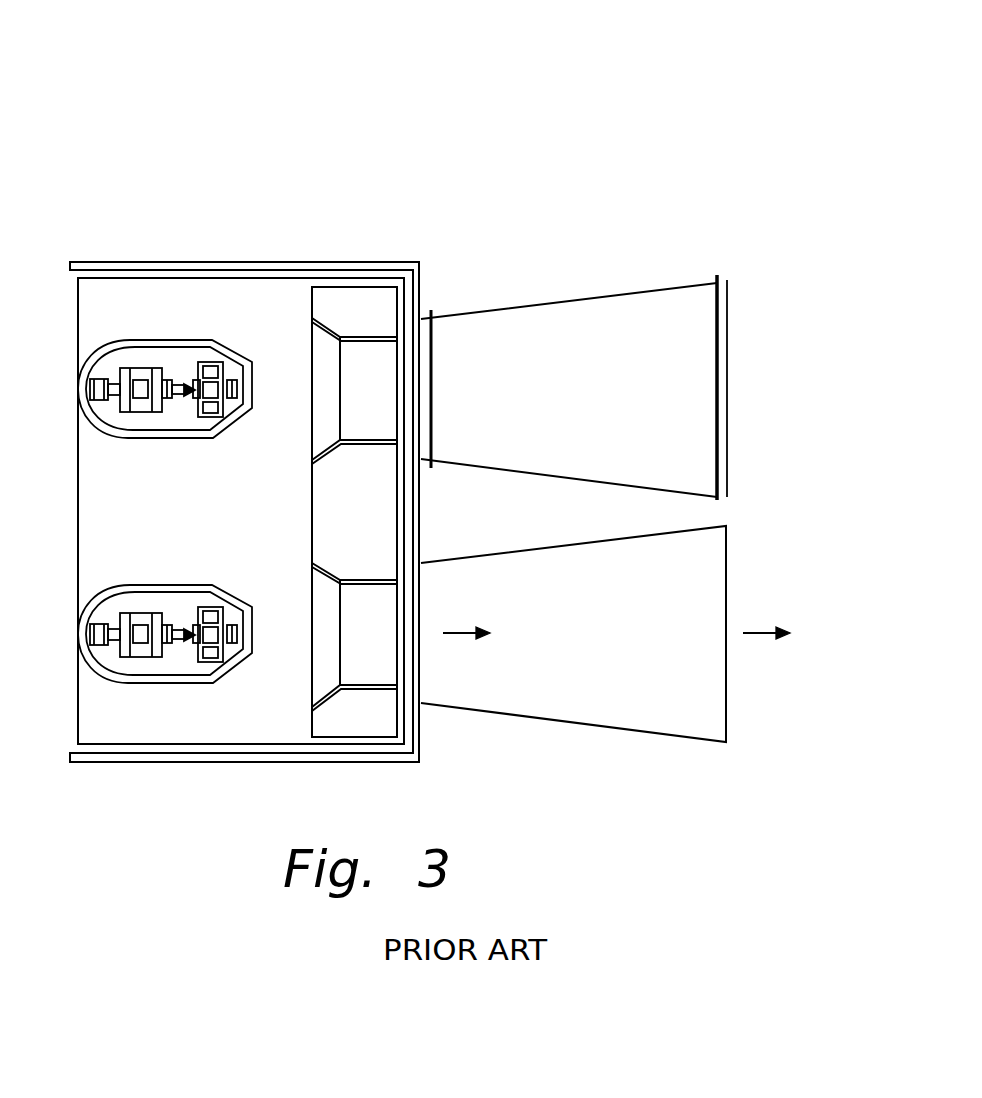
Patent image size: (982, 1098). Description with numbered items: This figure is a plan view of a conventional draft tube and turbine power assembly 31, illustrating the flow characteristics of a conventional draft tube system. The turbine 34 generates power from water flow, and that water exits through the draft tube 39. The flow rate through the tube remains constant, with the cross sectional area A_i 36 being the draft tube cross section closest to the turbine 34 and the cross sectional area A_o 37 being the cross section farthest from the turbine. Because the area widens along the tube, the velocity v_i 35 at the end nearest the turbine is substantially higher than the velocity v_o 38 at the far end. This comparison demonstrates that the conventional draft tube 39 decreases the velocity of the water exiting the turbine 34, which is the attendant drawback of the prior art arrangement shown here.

The prior art nozzle system 31 is at (484, 106).
The turbine 34 is at (97, 343).
The velocity v_i 35 is at (458, 652).
The cross sectional area A_i 36 is at (432, 252).
The cross sectional area A_o 37 is at (720, 218).
The velocity v_o 38 is at (777, 652).
The draft tube 39 is at (585, 297).